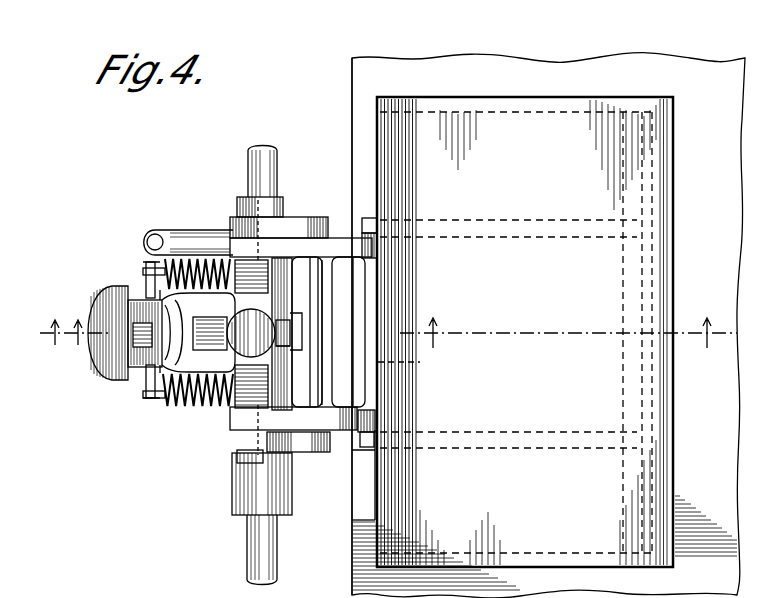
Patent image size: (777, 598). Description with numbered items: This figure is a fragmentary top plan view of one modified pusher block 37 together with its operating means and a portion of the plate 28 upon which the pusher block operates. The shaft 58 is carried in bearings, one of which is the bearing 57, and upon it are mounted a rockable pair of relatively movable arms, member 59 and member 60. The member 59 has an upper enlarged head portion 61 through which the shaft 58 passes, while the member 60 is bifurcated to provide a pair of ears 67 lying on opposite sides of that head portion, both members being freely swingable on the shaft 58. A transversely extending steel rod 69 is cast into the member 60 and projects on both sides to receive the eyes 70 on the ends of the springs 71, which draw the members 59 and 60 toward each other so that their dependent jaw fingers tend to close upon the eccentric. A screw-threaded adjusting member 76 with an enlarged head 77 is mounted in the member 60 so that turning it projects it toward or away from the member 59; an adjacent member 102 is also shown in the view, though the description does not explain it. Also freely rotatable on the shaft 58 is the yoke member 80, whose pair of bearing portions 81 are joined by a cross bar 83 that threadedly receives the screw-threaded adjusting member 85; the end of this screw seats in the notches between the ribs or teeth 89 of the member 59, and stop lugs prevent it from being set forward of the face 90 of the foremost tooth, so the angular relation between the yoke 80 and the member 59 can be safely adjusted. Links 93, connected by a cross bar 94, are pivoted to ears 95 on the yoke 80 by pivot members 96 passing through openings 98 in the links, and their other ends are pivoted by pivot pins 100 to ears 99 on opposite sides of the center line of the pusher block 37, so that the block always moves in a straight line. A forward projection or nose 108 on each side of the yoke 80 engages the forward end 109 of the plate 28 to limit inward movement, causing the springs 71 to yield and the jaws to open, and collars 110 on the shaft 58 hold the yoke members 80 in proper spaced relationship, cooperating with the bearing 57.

The plate 28 is at (618, 66).
The pusher block 37 is at (627, 317).
The bearing 57 is at (248, 490).
The shaft 58 is at (278, 148).
The arm member 59 is at (296, 308).
The arm member 60 is at (170, 410).
The upper enlarged head portion 61 is at (302, 328).
The ears 67 is at (200, 452).
The steel rod 69 is at (144, 282).
The eyes 70 is at (144, 265).
The springs 71 is at (192, 265).
The screw-threaded adjusting member 76 is at (147, 366).
The enlarged head 77 is at (97, 356).
The yoke member 80 is at (212, 490).
The bearing portions 81 is at (290, 232).
The cross bar 83 is at (266, 304).
The screw-threaded adjusting member 85 is at (293, 333).
The ribs or teeth 89 is at (281, 345).
The face 90 is at (169, 330).
The links 93 is at (332, 252).
The cross bar 94 is at (326, 387).
The ears 95 is at (285, 212).
The pivot members 96 is at (251, 334).
The openings 98 is at (260, 247).
The ears 99 is at (368, 228).
The pivot pins 100 is at (395, 362).
The shaft 102 is at (186, 235).
The forward projection or nose 108 is at (346, 252).
The forward end 109 is at (356, 572).
The collars 110 is at (245, 196).